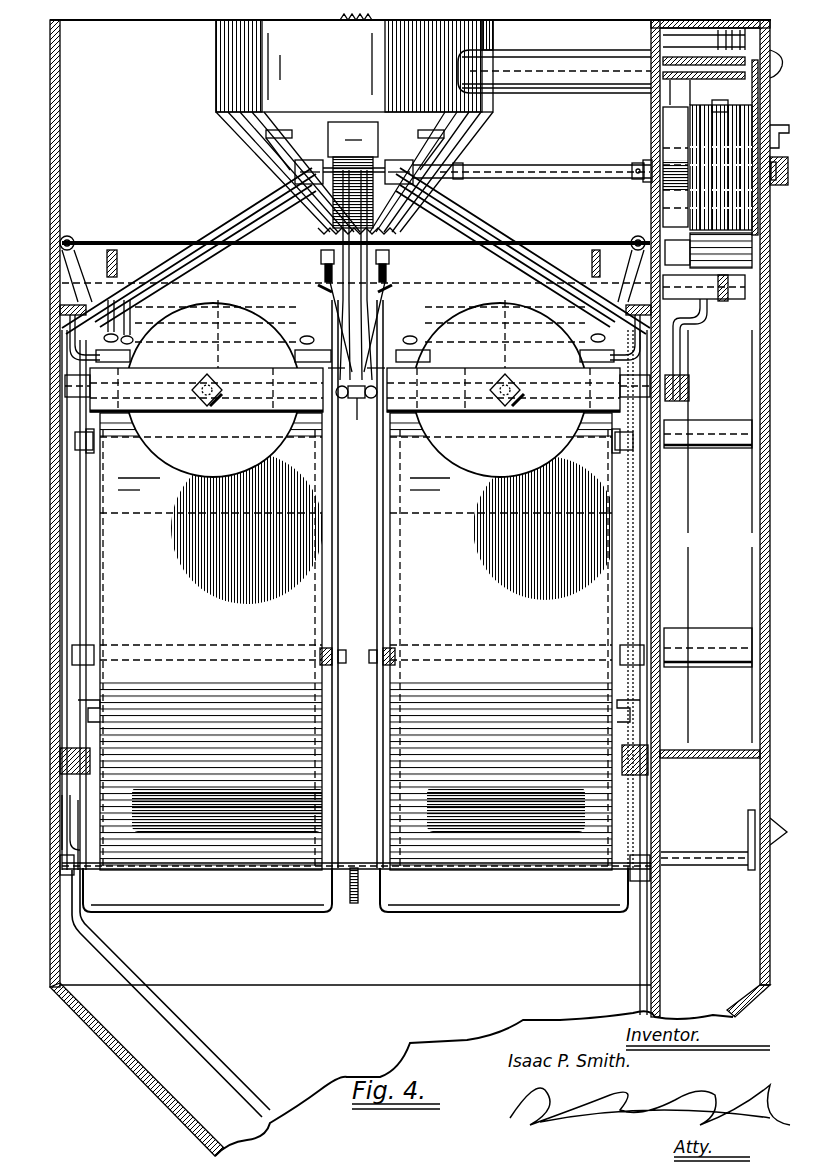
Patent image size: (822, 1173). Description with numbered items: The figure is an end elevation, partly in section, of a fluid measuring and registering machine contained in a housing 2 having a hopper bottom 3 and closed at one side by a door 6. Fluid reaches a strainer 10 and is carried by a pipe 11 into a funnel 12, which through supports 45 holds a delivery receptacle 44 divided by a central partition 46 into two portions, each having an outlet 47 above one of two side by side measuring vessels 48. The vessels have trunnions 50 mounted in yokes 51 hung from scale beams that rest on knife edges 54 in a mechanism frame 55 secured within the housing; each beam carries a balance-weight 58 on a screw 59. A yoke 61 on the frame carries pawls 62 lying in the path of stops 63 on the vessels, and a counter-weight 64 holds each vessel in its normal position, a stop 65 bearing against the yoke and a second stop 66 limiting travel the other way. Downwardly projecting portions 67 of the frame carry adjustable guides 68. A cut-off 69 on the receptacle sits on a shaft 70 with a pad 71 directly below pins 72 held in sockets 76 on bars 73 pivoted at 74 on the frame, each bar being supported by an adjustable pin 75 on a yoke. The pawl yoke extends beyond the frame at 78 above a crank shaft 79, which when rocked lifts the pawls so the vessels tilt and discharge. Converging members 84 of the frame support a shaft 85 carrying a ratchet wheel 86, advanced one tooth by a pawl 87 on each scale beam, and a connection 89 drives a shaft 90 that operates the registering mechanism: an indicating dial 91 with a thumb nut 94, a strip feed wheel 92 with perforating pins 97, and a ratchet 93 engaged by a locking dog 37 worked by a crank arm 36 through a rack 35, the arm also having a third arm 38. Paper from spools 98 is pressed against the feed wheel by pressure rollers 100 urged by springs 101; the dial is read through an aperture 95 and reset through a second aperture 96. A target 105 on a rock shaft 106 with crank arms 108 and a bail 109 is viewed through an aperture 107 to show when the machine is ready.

The housing 2 is at (50, 500).
The hopper bottom 3 is at (160, 1098).
The door 6 is at (770, 513).
The strainer 10 is at (758, 36).
The pipe 11 is at (580, 52).
The funnel 12 is at (494, 35).
The rack 35 is at (690, 384).
The crank arm 36 is at (681, 355).
The locking dog 37 is at (752, 242).
The third arm 38 is at (712, 303).
The delivery receptacle 44 is at (255, 302).
The supports 45 is at (300, 230).
The central partition 46 is at (354, 400).
The outlet 47 is at (238, 395).
The measuring vessel 48 is at (420, 600).
The trunnions 50 is at (370, 662).
The yoke 51 is at (380, 740).
The knife edges 54 is at (360, 422).
The mechanism frame 55 is at (60, 352).
The balance-weight 58 is at (182, 478).
The screw 59 is at (205, 374).
The yoke 61 is at (64, 383).
The pawls 62 is at (128, 400).
The stops 63 is at (135, 436).
The counter-weight 64 is at (355, 849).
The stop 65 is at (74, 441).
The stop 66 is at (78, 710).
The downwardly projecting portions 67 is at (72, 658).
The guides 68 is at (68, 774).
The cut-off 69 is at (420, 278).
The shaft 70 is at (340, 275).
The pad 71 is at (383, 275).
The pins 72 is at (324, 272).
The bars 73 is at (174, 241).
The pivot 74 is at (70, 236).
The pin 75 is at (108, 270).
The sockets 76 is at (320, 256).
The yoke extension 78 is at (128, 306).
The crank shaft 79 is at (140, 318).
The converging members 84 is at (258, 203).
The shaft 85 is at (294, 173).
The ratchet wheel 86 is at (328, 135).
The pawl 87 is at (280, 190).
The connection 89 is at (548, 168).
The shaft 90 is at (648, 162).
The indicating dial 91 is at (758, 90).
The strip feed wheel 92 is at (745, 128).
The ratchet 93 is at (663, 210).
The thumb nut 94 is at (782, 186).
The aperture 95 is at (771, 73).
The second aperture 96 is at (780, 152).
The perforating pins 97 is at (720, 104).
The spools 98 is at (743, 455).
The pressure rollers 100 is at (750, 278).
The springs 101 is at (704, 67).
The target 105 is at (748, 828).
The rock shaft 106 is at (356, 880).
The aperture 107 is at (762, 851).
The crank arms 108 is at (88, 872).
The bail 109 is at (205, 1056).